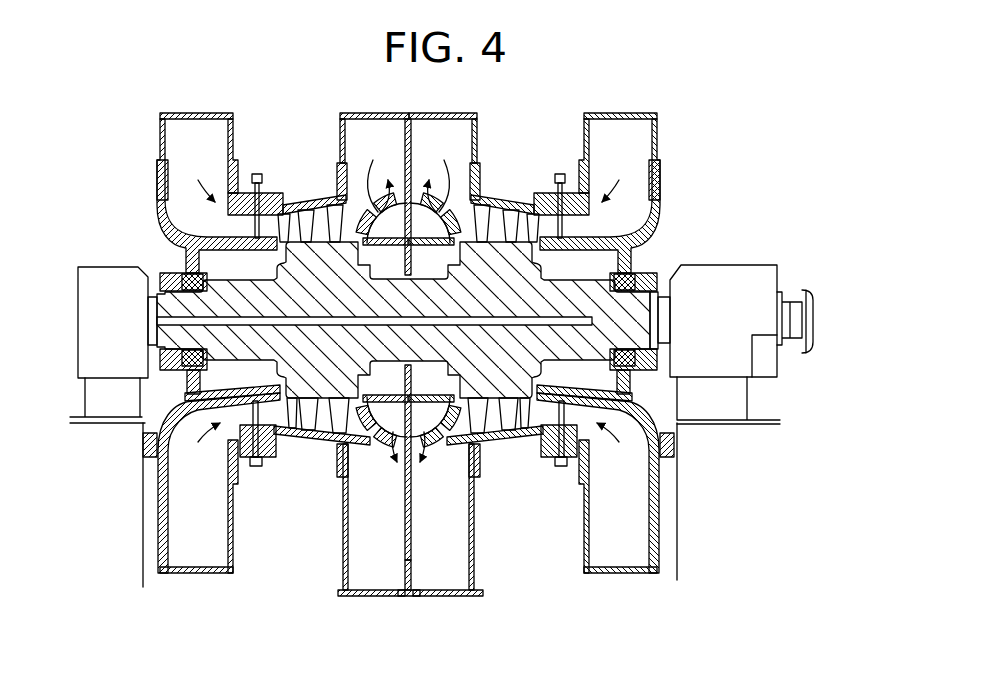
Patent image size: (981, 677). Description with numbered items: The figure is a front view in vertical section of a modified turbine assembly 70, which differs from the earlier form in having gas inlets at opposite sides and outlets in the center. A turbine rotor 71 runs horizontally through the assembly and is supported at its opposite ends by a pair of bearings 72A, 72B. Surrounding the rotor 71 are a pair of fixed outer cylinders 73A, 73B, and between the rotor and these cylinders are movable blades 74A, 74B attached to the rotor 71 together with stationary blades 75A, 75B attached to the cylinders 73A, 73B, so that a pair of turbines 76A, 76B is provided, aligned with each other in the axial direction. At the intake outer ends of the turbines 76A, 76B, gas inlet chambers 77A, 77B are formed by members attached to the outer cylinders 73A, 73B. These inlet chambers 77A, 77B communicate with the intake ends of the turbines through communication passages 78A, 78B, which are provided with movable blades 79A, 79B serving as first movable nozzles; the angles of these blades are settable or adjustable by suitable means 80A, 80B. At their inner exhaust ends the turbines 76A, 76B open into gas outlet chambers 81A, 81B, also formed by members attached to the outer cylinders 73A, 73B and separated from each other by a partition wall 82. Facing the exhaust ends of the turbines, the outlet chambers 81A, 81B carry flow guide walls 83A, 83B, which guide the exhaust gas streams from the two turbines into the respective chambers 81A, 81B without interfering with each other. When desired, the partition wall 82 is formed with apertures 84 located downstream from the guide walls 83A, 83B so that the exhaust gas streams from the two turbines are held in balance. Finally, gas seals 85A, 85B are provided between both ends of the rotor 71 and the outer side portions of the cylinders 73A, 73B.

The modified turbine assembly 70 is at (561, 91).
The turbine rotor 71 is at (640, 310).
The bearing 72A is at (107, 276).
The bearing 72B is at (762, 277).
The fixed outer cylinder 73A is at (162, 173).
The fixed outer cylinder 73B is at (663, 173).
The movable blade 74A is at (307, 210).
The movable blade 74B is at (530, 228).
The stationary blade 75A is at (306, 432).
The stationary blade 75B is at (505, 432).
The turbine 76A is at (327, 193).
The turbine 76B is at (493, 191).
The gas inlet chamber 77A is at (213, 114).
The gas inlet chamber 77B is at (648, 112).
The communication passage 78A is at (232, 228).
The communication passage 78B is at (633, 258).
The movable blade 79A is at (262, 217).
The movable blade 79B is at (550, 220).
The means for setting blade angles 80A is at (258, 468).
The means for setting blade angles 80B is at (560, 468).
The gas outlet chamber 81A is at (370, 597).
The gas outlet chamber 81B is at (452, 597).
The partition wall 82 is at (405, 583).
The flow guide wall 83A is at (375, 287).
The flow guide wall 83B is at (443, 287).
The aperture 84 is at (415, 505).
The gas seal 85A is at (142, 427).
The gas seal 85B is at (678, 423).